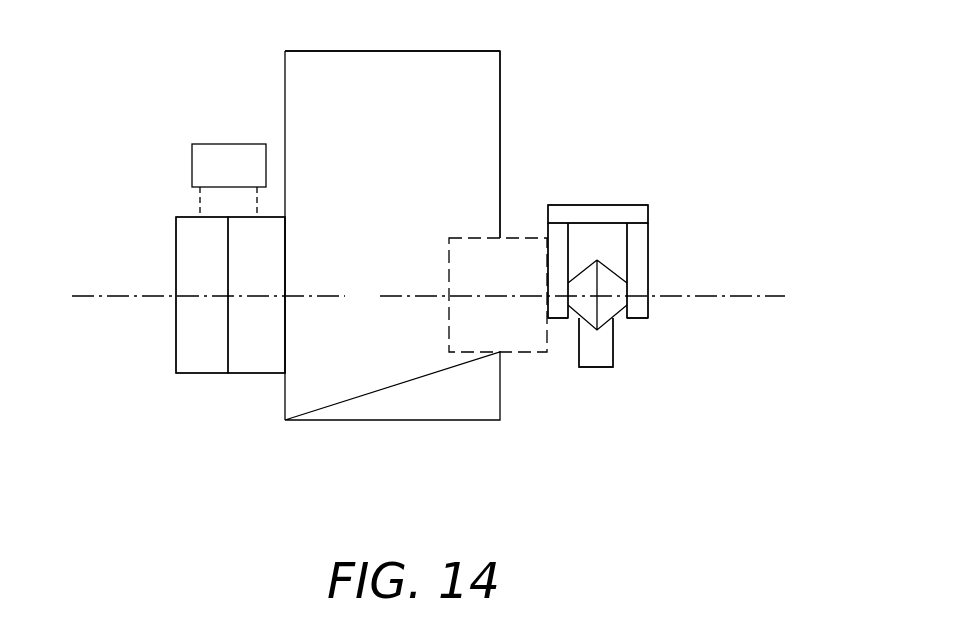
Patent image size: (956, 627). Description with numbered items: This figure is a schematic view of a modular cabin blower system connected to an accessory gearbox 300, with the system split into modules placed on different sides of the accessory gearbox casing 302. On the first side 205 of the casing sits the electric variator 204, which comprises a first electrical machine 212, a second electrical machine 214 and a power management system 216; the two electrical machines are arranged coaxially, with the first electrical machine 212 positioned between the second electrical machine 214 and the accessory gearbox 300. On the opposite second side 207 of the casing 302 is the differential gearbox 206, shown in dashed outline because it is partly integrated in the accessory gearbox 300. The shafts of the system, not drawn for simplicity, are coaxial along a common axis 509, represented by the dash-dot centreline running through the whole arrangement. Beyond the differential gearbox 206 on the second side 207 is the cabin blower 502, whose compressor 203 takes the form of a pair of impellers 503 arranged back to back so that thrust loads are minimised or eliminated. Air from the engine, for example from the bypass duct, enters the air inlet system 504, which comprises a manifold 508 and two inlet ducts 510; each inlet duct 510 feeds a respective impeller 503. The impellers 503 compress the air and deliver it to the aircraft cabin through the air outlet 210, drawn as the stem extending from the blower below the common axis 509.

The accessory gearbox 300 is at (405, 130).
The accessory gearbox casing 302 is at (393, 51).
The first side 205 is at (285, 72).
The second side 207 is at (500, 72).
The electric variator 204 is at (152, 205).
The first electrical machine 212 is at (198, 362).
The second electrical machine 214 is at (255, 362).
The power management system 216 is at (205, 162).
The differential gearbox 206 is at (522, 279).
The common axis 509 is at (773, 293).
The manifold 508 is at (595, 212).
The air inlet system 504 is at (631, 188).
The inlet ducts 510 is at (562, 237).
The cabin blower 502 is at (678, 249).
The impellers 503 is at (613, 305).
The air outlet 210 is at (598, 355).
The compressor 203 is at (628, 361).